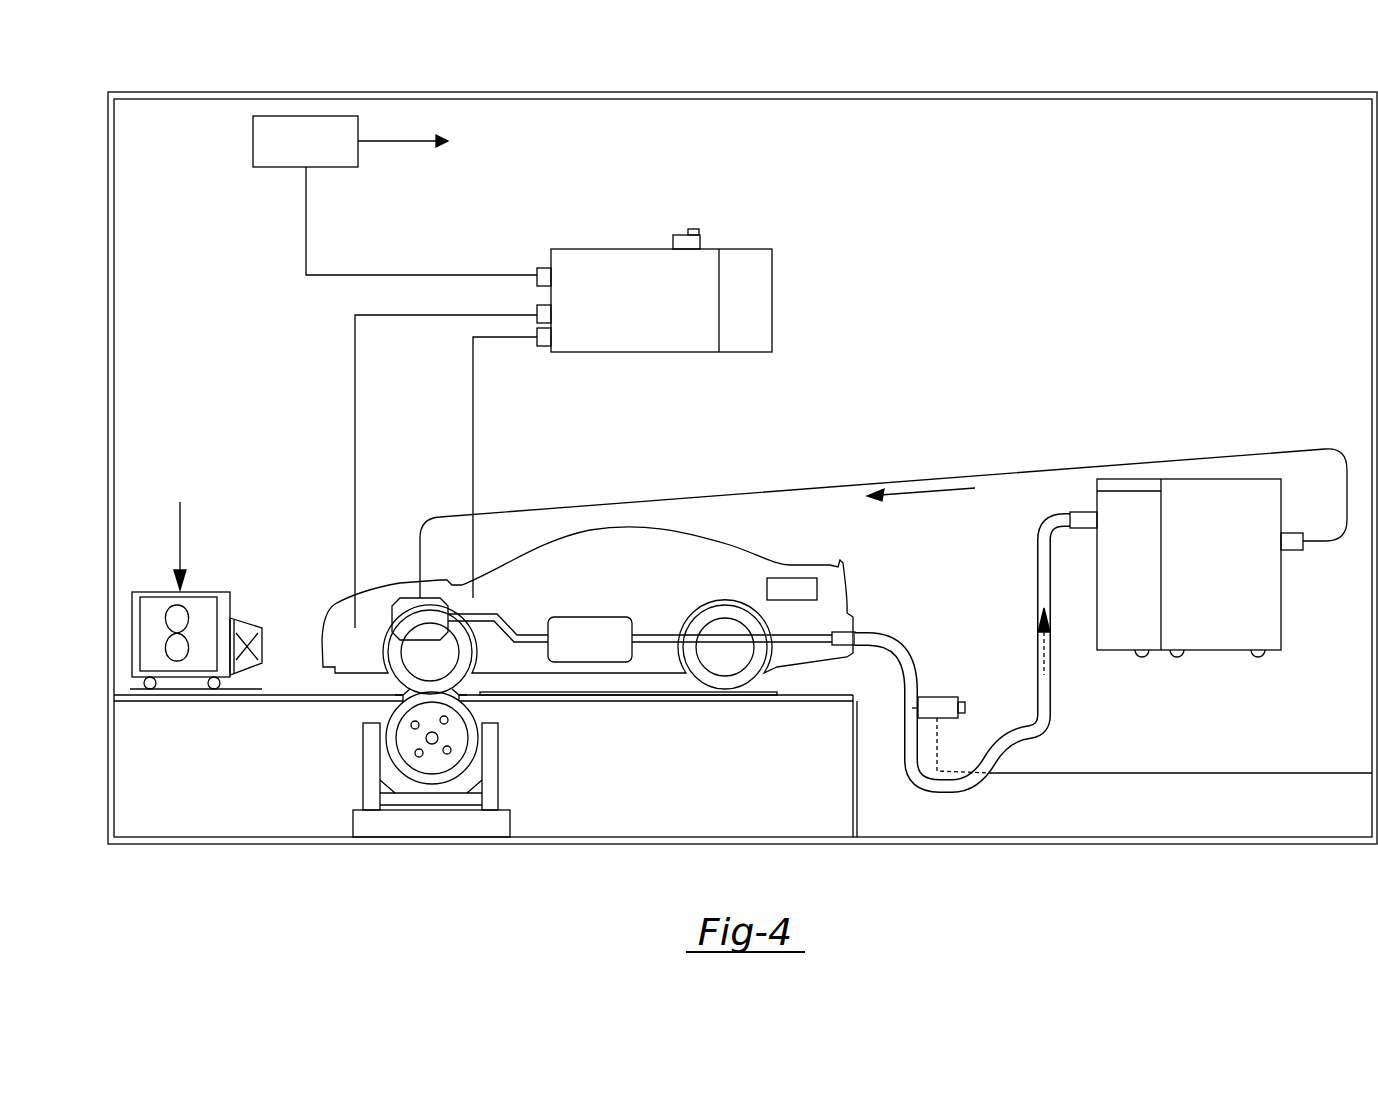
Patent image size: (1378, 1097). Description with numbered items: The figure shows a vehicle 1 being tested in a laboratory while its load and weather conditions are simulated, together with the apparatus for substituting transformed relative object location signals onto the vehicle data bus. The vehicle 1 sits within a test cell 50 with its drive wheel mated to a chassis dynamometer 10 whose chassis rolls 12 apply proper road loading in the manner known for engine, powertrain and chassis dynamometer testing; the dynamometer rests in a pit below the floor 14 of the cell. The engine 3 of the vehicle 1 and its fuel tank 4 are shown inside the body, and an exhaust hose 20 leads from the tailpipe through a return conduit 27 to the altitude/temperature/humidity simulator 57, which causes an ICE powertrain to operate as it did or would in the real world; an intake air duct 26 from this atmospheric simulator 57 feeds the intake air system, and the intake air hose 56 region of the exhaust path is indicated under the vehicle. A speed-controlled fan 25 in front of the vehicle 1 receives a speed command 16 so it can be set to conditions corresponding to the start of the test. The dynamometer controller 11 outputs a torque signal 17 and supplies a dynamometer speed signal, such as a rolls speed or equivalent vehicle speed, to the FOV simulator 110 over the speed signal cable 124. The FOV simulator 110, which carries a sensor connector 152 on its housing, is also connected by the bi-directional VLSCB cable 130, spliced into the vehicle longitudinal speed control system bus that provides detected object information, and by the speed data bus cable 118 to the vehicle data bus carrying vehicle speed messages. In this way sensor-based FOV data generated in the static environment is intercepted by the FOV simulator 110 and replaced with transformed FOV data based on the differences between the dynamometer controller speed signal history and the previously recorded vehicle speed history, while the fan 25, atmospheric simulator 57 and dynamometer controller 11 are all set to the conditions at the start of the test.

The test cell 50 is at (1318, 92).
The dynamometer controller 11 is at (303, 116).
The torque signal 17 is at (425, 141).
The speed signal cable 124 is at (306, 222).
The sensor connector 152 is at (700, 243).
The FOV simulator 110 is at (664, 320).
The VLSCB cable 130 is at (355, 444).
The speed data bus cable 118 is at (473, 445).
The intake air duct 26 is at (1015, 468).
The vehicle 1 is at (717, 540).
The engine 3 is at (407, 610).
The intake air hose 56 is at (598, 617).
The fuel tank 4 is at (817, 590).
The exhaust hose 20 is at (865, 632).
The exhaust return conduit 27 is at (1045, 712).
The altitude/temperature/humidity simulator 57 is at (1281, 620).
The speed signal 16 is at (180, 550).
The speed-controlled fan 25 is at (150, 641).
The chassis rolls 12 is at (388, 712).
The chassis dynamometer 10 is at (472, 790).
The floor 14 is at (1175, 770).